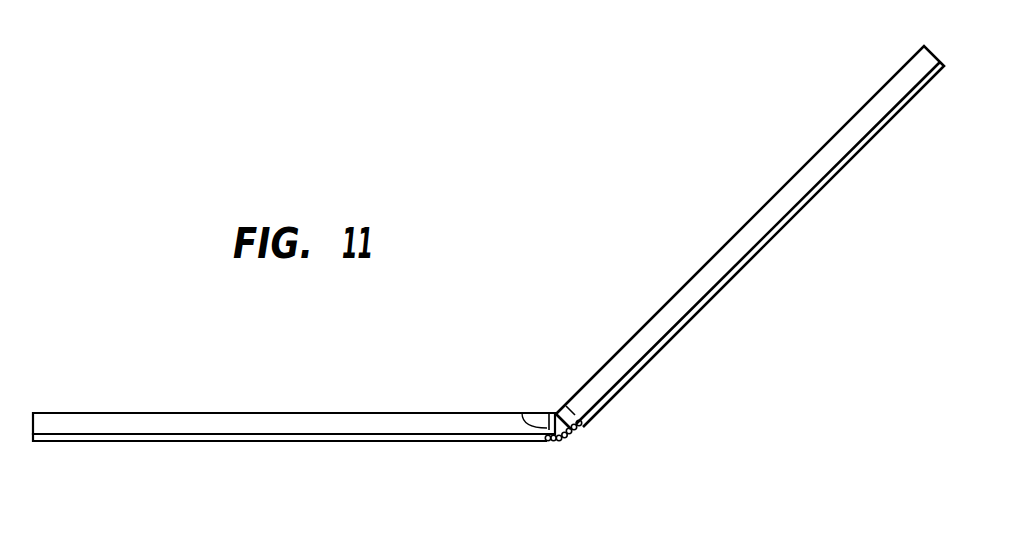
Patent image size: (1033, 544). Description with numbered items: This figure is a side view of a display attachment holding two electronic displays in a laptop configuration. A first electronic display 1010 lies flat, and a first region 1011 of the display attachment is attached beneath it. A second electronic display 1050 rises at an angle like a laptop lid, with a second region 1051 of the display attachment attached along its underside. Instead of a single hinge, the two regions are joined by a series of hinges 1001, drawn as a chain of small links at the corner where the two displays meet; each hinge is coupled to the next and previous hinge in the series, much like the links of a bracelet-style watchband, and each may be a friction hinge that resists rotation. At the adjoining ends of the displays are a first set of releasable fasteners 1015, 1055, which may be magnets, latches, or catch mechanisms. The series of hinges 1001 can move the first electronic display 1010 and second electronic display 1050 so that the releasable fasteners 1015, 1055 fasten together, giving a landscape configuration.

The first electronic display 1010 is at (265, 425).
The first region 1011 is at (270, 442).
The releasable fastener 1015 is at (522, 413).
The series of hinges 1001 is at (563, 441).
The second electronic display 1050 is at (776, 206).
The second region 1051 is at (820, 185).
The releasable fastener 1055 is at (569, 408).